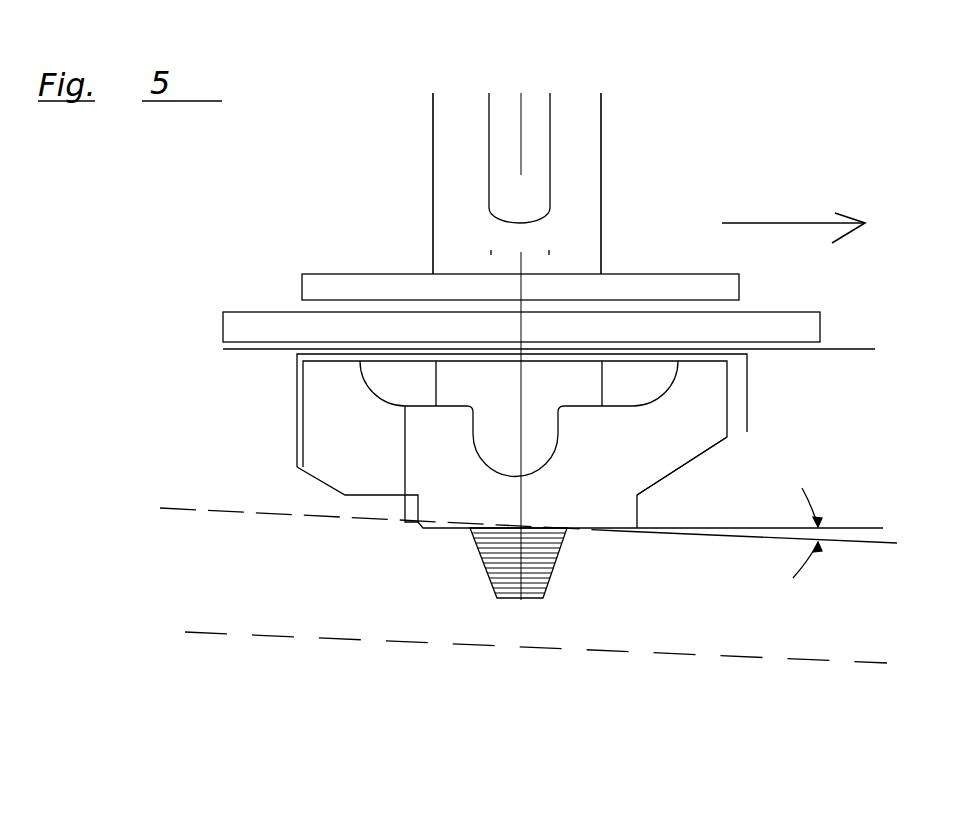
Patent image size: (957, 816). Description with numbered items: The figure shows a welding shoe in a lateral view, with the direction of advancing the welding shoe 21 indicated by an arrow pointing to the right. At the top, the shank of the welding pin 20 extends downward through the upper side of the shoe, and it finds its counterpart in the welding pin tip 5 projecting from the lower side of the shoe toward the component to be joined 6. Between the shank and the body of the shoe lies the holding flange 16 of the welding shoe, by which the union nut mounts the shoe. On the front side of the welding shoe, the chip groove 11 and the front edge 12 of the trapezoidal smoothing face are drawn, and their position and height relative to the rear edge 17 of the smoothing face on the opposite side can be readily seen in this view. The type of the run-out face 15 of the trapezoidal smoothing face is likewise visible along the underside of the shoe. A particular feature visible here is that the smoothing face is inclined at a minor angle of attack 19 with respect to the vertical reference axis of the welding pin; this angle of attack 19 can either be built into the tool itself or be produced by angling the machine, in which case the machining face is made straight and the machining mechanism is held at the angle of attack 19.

The welding pin tip 5 is at (542, 590).
The component to be joined 6 is at (735, 612).
The chip groove 11 is at (637, 507).
The front edge of the trapezoidal smoothing face 12 is at (637, 528).
The run-out face of the trapezoidal smoothing face 15 is at (427, 528).
The holding flange of the welding shoe for the union nut 16 is at (278, 330).
The rear edge of the trapezoidal smoothing face 17 is at (345, 495).
The angle of attack of the smoothing face 19 is at (817, 500).
The shank of the welding pin 20 is at (585, 155).
The direction of advancing the welding shoe 21 is at (768, 223).